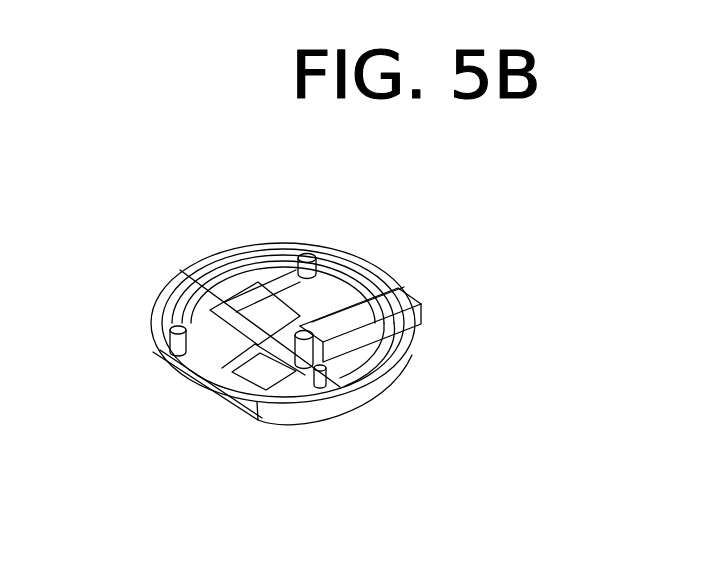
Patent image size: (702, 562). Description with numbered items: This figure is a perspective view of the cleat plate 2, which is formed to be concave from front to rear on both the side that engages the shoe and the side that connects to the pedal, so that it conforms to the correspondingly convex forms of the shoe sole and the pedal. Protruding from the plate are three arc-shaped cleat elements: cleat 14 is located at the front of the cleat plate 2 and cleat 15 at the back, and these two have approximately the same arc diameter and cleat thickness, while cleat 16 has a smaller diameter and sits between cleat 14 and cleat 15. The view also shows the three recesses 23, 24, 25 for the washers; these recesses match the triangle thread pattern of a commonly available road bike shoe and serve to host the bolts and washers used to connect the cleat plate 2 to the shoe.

The cleat plate 2 is at (218, 353).
The cleat 14 is at (230, 248).
The cleat 15 is at (417, 347).
The cleat 16 is at (357, 295).
The recess 23 is at (392, 297).
The recess 24 is at (248, 293).
The recess 25 is at (236, 385).